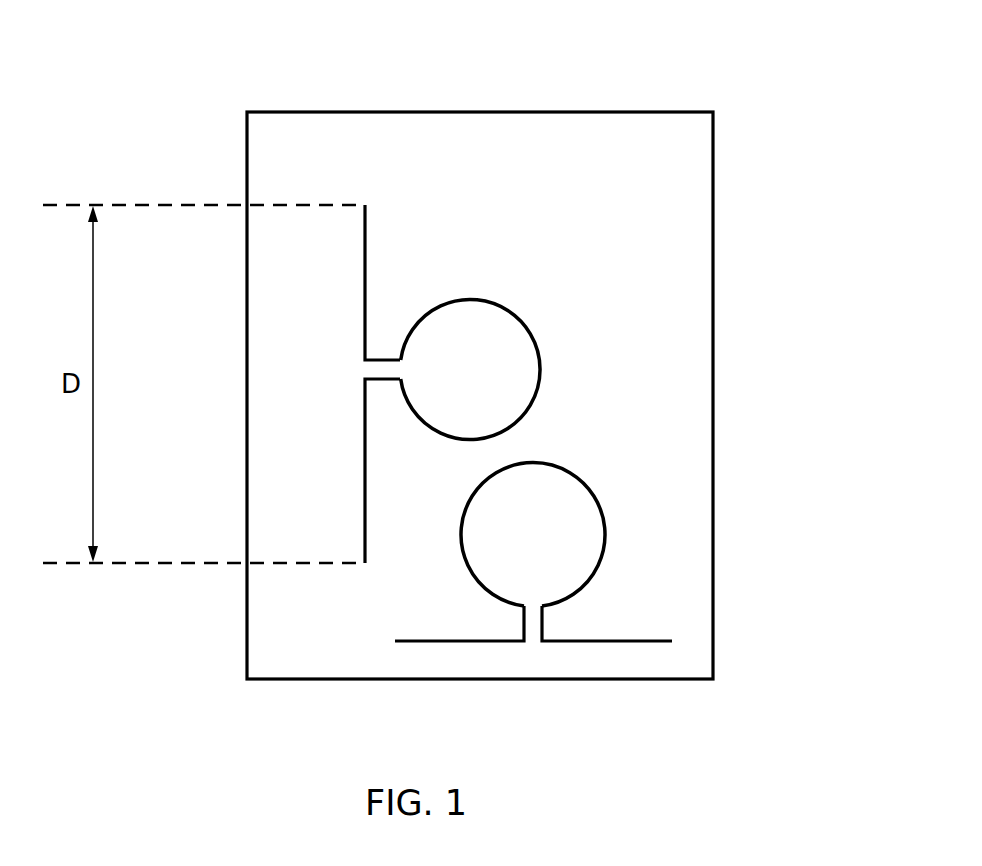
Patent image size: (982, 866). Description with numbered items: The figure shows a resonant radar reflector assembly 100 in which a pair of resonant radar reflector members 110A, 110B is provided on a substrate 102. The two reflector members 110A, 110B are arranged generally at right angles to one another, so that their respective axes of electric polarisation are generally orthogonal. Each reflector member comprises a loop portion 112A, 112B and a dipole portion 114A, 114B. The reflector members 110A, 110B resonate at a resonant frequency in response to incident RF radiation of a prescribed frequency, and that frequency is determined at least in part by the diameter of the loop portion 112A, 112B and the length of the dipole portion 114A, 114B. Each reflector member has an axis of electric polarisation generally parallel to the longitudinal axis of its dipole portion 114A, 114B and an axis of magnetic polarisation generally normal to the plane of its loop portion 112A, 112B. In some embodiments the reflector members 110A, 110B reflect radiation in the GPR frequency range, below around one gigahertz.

The resonant radar reflector assembly 100 is at (656, 84).
The substrate 102 is at (685, 662).
The resonant radar reflector member 110A is at (450, 643).
The loop portion 112A is at (605, 537).
The dipole portion 114A is at (643, 643).
The resonant radar reflector member 110B is at (364, 302).
The loop portion 112B is at (540, 370).
The dipole portion 114B is at (364, 430).